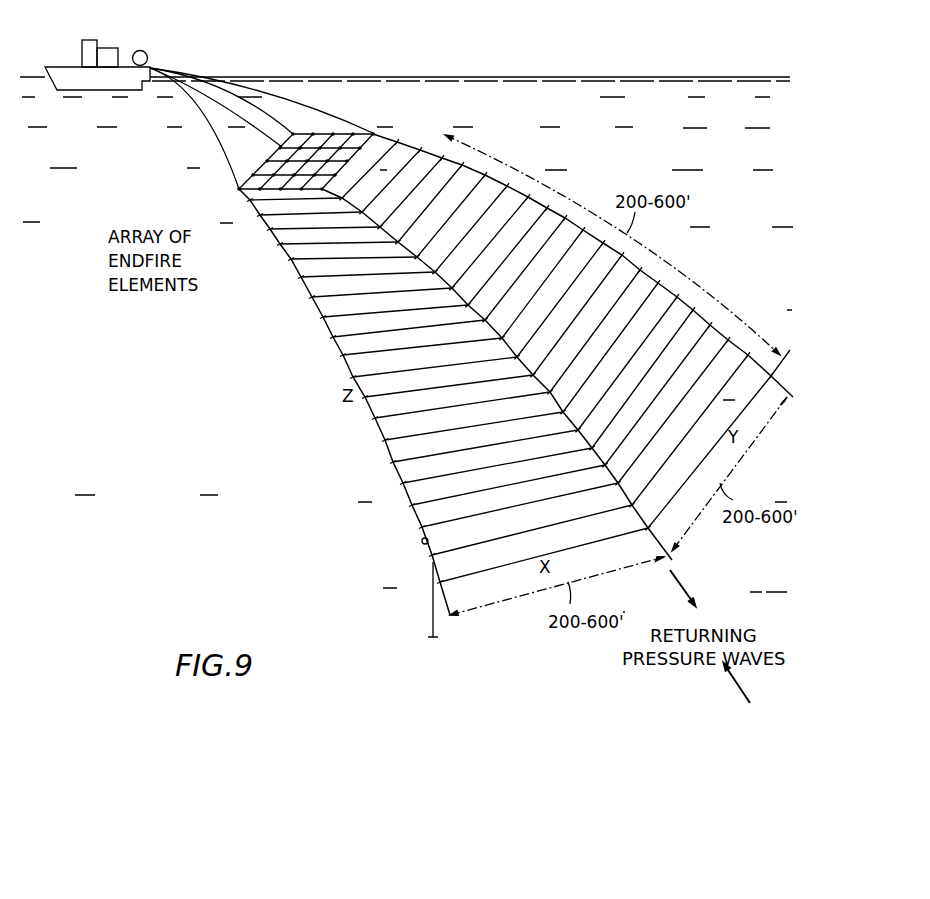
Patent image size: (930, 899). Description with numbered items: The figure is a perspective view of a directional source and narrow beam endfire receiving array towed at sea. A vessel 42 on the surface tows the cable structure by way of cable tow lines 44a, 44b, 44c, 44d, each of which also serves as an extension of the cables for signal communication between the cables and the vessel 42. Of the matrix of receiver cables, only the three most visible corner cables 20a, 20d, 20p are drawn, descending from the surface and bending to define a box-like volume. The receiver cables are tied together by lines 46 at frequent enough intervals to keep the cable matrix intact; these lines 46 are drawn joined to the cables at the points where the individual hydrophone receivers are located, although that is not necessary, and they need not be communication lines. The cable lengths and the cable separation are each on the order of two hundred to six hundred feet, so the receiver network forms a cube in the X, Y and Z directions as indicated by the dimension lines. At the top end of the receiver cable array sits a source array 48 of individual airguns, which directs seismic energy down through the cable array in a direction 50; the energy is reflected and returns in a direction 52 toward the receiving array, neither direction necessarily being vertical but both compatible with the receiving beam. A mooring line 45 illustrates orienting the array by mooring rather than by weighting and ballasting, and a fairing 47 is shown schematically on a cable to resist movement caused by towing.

The vessel 42 is at (65, 72).
The cable tow line 44a is at (205, 128).
The cable tow line 44b is at (215, 97).
The cable tow line 44c is at (260, 103).
The cable tow line 44d is at (300, 107).
The source array 48 is at (248, 168).
The corner cable 20a is at (399, 481).
The corner cable 20d is at (576, 418).
The corner cable 20p is at (702, 316).
The connecting line 46 is at (472, 427).
The fairing 47 is at (422, 541).
The mooring line 45 is at (432, 619).
The seismic energy direction 50 is at (682, 588).
The return direction 52 is at (738, 697).